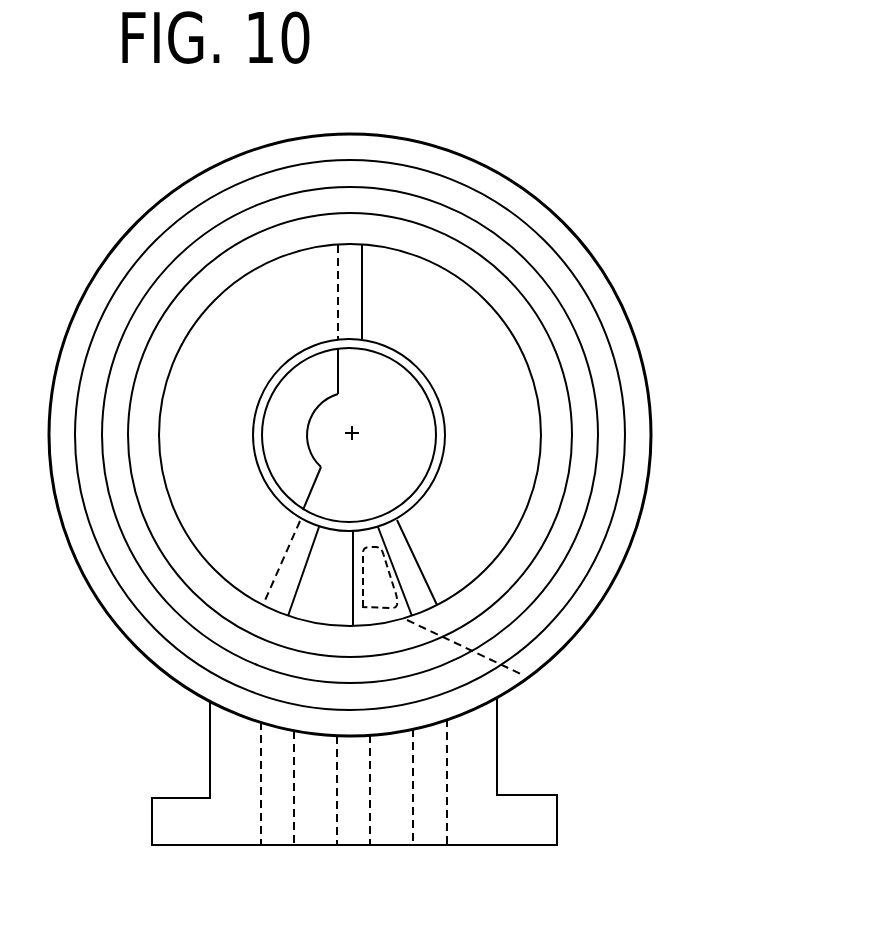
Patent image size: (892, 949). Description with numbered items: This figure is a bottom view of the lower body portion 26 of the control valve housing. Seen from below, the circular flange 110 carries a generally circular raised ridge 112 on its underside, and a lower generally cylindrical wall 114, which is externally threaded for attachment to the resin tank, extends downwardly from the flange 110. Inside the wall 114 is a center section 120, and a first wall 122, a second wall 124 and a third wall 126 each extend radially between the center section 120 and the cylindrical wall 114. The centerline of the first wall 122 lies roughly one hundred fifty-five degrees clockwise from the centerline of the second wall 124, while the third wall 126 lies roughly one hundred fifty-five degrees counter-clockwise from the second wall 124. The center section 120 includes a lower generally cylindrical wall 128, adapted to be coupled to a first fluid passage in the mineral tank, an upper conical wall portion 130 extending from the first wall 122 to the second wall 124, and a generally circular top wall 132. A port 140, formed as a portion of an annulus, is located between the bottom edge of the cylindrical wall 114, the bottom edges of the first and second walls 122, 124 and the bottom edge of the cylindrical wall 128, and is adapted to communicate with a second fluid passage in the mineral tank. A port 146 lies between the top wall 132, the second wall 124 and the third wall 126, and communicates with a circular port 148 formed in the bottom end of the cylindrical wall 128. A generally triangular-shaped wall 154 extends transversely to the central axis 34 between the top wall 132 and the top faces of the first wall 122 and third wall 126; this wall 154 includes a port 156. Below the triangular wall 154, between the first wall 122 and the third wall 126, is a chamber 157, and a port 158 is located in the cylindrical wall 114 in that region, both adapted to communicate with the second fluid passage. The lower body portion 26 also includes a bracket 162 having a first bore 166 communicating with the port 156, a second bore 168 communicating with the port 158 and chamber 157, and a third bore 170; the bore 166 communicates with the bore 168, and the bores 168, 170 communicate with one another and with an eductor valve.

The lower body portion 26 is at (562, 172).
The central axis 34 is at (358, 430).
The circular flange 110 is at (578, 265).
The raised ridge 112 is at (577, 320).
The lower cylindrical wall 114 is at (550, 383).
The center section 120 is at (438, 372).
The first wall 122 is at (412, 578).
The second wall 124 is at (350, 292).
The third wall 126 is at (298, 547).
The lower cylindrical wall 128 is at (438, 443).
The conical wall portion 130 is at (385, 372).
The top wall 132 is at (305, 433).
The port 140 is at (502, 513).
The port 146 is at (288, 465).
The circular port 148 is at (417, 432).
The triangular-shaped wall 154 is at (332, 552).
The port 156 is at (487, 660).
The chamber 157 is at (358, 545).
The port 158 is at (310, 618).
The bracket 162 is at (497, 765).
The first bore 166 is at (447, 803).
The second bore 168 is at (370, 800).
The third bore 170 is at (294, 800).